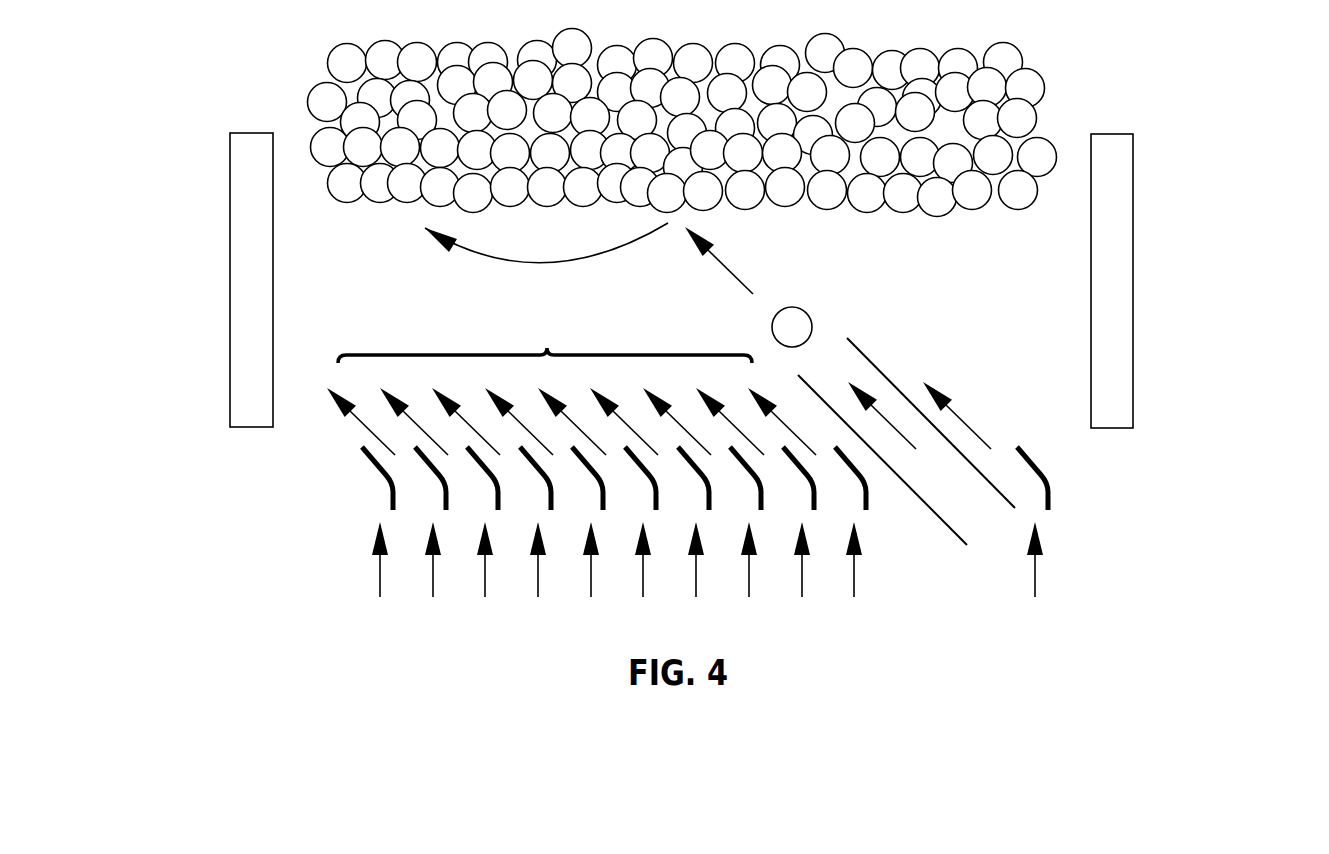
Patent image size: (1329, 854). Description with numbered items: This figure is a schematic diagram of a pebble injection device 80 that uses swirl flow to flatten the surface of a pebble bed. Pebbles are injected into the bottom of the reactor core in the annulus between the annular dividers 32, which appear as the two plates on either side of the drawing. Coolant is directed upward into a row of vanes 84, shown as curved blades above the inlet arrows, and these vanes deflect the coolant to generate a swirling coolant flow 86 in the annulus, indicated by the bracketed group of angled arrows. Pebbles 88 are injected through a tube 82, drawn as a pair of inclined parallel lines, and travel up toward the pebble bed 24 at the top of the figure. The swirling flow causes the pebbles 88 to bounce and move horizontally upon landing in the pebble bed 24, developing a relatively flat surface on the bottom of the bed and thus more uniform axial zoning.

The pebble bed 24 is at (1038, 70).
The annular dividers 32 is at (230, 288).
The pebble injection device 80 is at (1160, 513).
The tube 82 is at (872, 360).
The vanes 84 is at (447, 493).
The swirling coolant flow 86 is at (545, 339).
The pebbles 88 is at (803, 310).